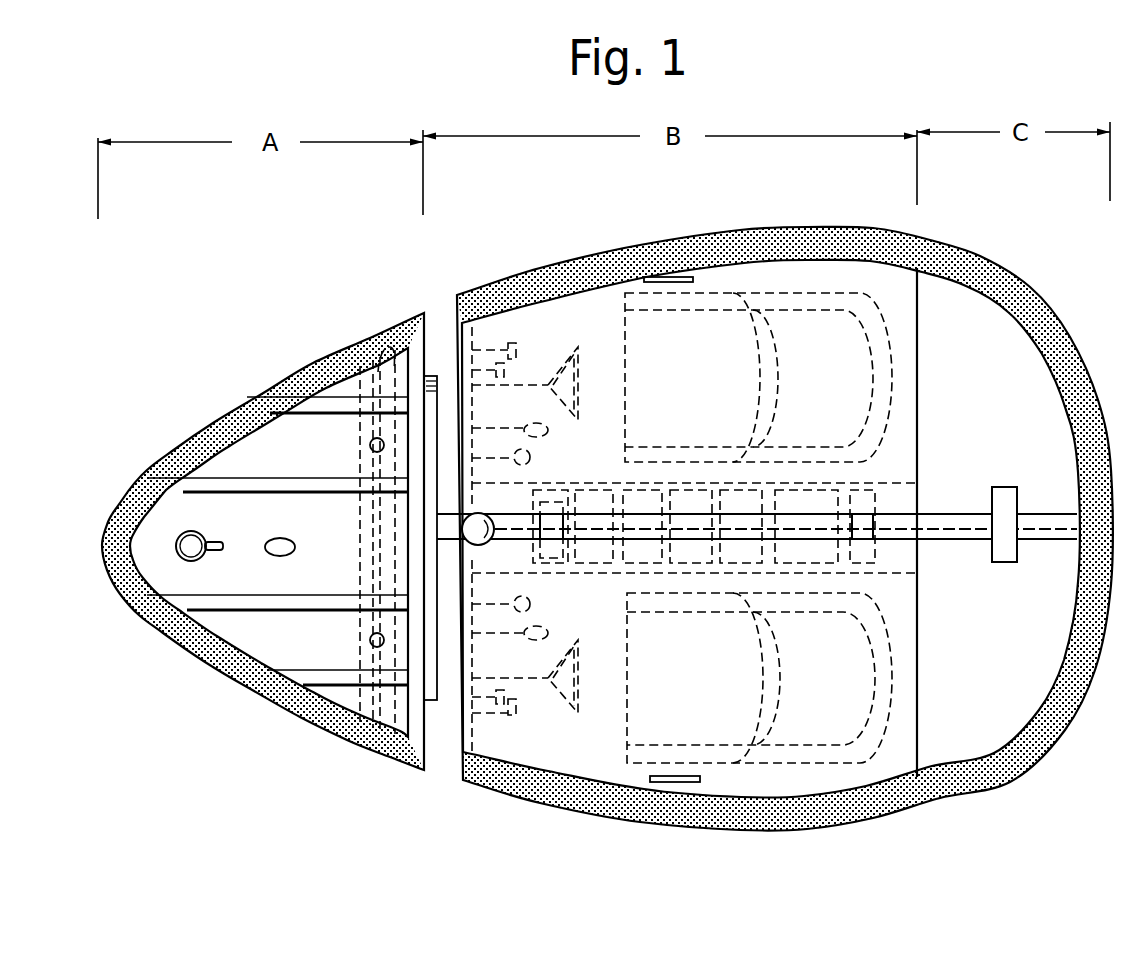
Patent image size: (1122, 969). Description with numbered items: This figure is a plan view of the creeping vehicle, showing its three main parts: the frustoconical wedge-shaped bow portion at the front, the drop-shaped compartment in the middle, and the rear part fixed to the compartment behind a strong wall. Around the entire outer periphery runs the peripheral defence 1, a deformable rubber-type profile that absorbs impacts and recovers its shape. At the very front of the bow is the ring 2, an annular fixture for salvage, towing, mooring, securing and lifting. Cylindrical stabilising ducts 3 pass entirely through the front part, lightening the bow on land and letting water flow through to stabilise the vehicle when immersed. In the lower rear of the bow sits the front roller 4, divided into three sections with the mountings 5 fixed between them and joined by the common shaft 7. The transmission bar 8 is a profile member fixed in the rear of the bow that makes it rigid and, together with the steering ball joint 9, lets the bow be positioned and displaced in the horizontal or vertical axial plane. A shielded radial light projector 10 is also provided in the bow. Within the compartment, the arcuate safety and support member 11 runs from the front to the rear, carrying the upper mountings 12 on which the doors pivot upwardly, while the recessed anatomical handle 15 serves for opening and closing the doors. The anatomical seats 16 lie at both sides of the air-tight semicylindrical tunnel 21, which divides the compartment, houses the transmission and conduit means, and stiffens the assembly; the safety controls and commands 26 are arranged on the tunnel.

The peripheral defence 1 is at (180, 637).
The ring 2 is at (177, 553).
The stabilising ducts 3 is at (277, 483).
The front roller 4 is at (350, 342).
The mountings 5 is at (370, 643).
The shaft of the roller 7 is at (386, 345).
The transmission bar 8 is at (434, 700).
The steering ball joint 9 is at (492, 543).
The radial light projector 10 is at (295, 545).
The arcuate safety and support member 11 is at (808, 525).
The mounting for the doors 12 is at (553, 528).
The anatomical handle 15 is at (670, 282).
The anatomical seats 16 is at (814, 318).
The air-tight semicylindrical tunnel 21 is at (897, 562).
The safety controls and commands 26 is at (765, 478).